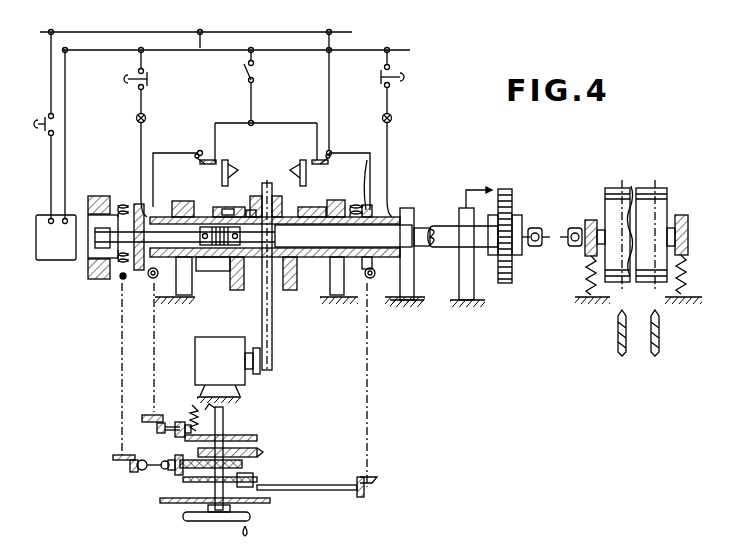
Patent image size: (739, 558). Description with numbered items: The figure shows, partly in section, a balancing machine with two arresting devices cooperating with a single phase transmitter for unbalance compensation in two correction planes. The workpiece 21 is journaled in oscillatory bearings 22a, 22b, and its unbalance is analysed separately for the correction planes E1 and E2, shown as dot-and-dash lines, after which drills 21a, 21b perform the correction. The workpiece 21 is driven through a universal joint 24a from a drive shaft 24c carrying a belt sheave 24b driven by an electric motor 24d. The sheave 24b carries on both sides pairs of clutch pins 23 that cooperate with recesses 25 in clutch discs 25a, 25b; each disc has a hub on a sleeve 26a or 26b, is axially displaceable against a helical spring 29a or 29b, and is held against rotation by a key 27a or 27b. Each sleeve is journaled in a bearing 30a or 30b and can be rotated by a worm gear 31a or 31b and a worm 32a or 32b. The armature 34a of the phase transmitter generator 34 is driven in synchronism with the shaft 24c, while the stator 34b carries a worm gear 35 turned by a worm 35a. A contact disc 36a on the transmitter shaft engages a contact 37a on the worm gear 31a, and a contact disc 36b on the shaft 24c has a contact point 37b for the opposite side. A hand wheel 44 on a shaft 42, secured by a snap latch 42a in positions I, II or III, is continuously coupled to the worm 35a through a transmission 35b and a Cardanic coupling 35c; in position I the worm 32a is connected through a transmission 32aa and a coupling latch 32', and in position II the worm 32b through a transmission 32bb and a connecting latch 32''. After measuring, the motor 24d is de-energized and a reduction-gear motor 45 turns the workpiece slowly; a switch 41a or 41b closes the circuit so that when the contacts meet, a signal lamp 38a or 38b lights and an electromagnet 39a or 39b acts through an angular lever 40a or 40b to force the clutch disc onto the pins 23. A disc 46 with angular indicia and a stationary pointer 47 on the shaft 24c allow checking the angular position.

The workpiece 21 is at (640, 186).
The drill 21a is at (620, 356).
The drill 21b is at (659, 354).
The oscillatory bearing 22a is at (591, 218).
The oscillatory bearing 22b is at (684, 214).
The clutch pins 23 is at (263, 184).
The universal joint 24a is at (545, 224).
The belt sheave 24b is at (280, 268).
The drive shaft 24c is at (420, 226).
The electric motor 24d is at (220, 337).
The recesses 25 is at (230, 279).
The clutch disc 25a is at (218, 282).
The clutch disc 25b is at (272, 310).
The sleeve 26a is at (180, 201).
The sleeve 26b is at (321, 199).
The key 27a is at (220, 207).
The key 27b is at (253, 236).
The helical spring 29a is at (228, 174).
The helical spring 29b is at (291, 174).
The bearing 30a is at (175, 280).
The bearing 30b is at (337, 295).
The worm gear 31a is at (150, 322).
The worm gear 31b is at (366, 160).
The worm 32a is at (154, 279).
The worm 32b is at (364, 290).
The transmission 32aa is at (142, 418).
The coupling latch 32' is at (130, 443).
The connecting latch 32'' is at (269, 469).
The transmission 32bb is at (317, 486).
The phase transmitter generator 34 is at (98, 215).
The armature 34a is at (92, 246).
The stator 34b is at (86, 208).
The worm gear 35 is at (134, 204).
The worm 35a is at (120, 278).
The transmission 35b is at (113, 460).
The Cardanic coupling 35c is at (142, 468).
The contact disc 36a is at (153, 278).
The contact disc 36b is at (393, 280).
The contact 37a is at (141, 167).
The contact point 37b is at (387, 175).
The signal lamp 38a is at (136, 118).
The signal lamp 38b is at (392, 118).
The electromagnet 39a is at (210, 152).
The electromagnet 39b is at (318, 160).
The angular lever 40a is at (208, 166).
The angular lever 40b is at (346, 181).
The switch 41a is at (122, 70).
The switch 41b is at (410, 69).
The shaft 42 is at (215, 490).
The snap latch 42a is at (195, 406).
The hand wheel 44 is at (183, 516).
The reduction-gear motor 45 is at (36, 242).
The disc 46 is at (506, 189).
The stationary pointer 47 is at (466, 185).
The correction plane E1 is at (622, 182).
The correction plane E2 is at (655, 182).
The selective position I is at (223, 406).
The selective position II is at (223, 421).
The selective position III is at (223, 410).